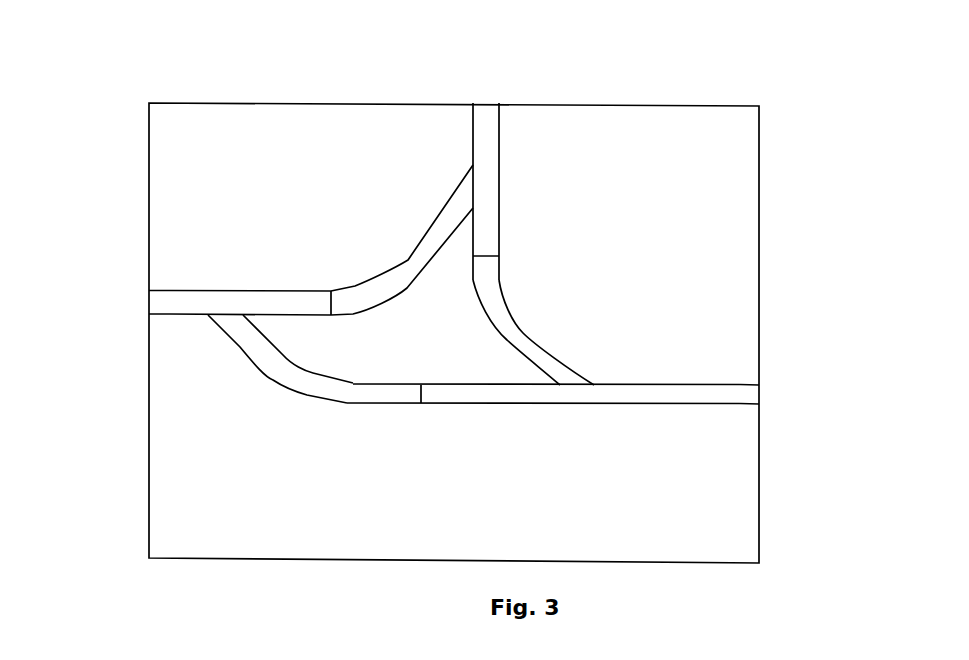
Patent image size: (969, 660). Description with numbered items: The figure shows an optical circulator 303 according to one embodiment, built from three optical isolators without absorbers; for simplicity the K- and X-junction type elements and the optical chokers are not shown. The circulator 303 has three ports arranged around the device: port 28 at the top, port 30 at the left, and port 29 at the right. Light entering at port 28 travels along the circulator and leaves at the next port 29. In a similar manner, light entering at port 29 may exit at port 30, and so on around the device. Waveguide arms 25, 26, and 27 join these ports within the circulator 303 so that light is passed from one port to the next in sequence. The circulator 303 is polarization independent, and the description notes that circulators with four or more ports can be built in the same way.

The optical circulator 303 is at (473, 311).
The first waveguide arm to Port 28 25 is at (489, 197).
The second waveguide arm to Port 29 26 is at (607, 438).
The input waveguide arm from Port 30 27 is at (227, 298).
The port 28 is at (514, 76).
The port 29 is at (802, 399).
The port 30 is at (105, 303).